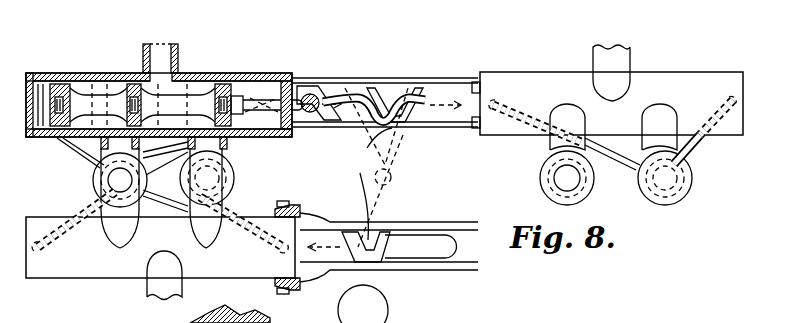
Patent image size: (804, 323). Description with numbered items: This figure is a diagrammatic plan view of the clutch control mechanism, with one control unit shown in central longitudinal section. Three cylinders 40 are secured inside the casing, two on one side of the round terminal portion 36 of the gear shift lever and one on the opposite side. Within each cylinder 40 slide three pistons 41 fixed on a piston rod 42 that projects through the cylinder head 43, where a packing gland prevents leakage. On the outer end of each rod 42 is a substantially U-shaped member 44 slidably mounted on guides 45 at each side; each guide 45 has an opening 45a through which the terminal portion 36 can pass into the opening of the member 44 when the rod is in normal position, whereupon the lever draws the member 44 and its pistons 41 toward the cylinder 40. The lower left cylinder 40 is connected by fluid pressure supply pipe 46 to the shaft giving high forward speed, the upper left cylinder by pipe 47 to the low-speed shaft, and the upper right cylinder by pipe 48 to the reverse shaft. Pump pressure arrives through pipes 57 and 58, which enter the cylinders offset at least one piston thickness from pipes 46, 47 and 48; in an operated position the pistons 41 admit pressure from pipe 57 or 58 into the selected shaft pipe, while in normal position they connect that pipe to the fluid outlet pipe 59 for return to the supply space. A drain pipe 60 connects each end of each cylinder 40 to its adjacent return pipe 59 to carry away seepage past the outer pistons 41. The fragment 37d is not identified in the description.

The terminal portion 36 is at (315, 114).
The gear fragment 37d is at (270, 316).
The cylinder 40 is at (97, 75).
The piston 41 is at (72, 83).
The piston rod 42 is at (255, 102).
The cylinder head 43 is at (292, 83).
The U-shaped member 44 is at (317, 88).
The guide 45 is at (368, 78).
The opening 45a is at (358, 170).
The fluid pressure supply pipe 46 is at (150, 292).
The pipe 47 is at (158, 50).
The pipe 48 is at (615, 60).
The pipe 57 is at (243, 198).
The pipe 58 is at (574, 181).
The fluid outlet pipe 59 is at (100, 147).
The drain pipe 60 is at (87, 200).